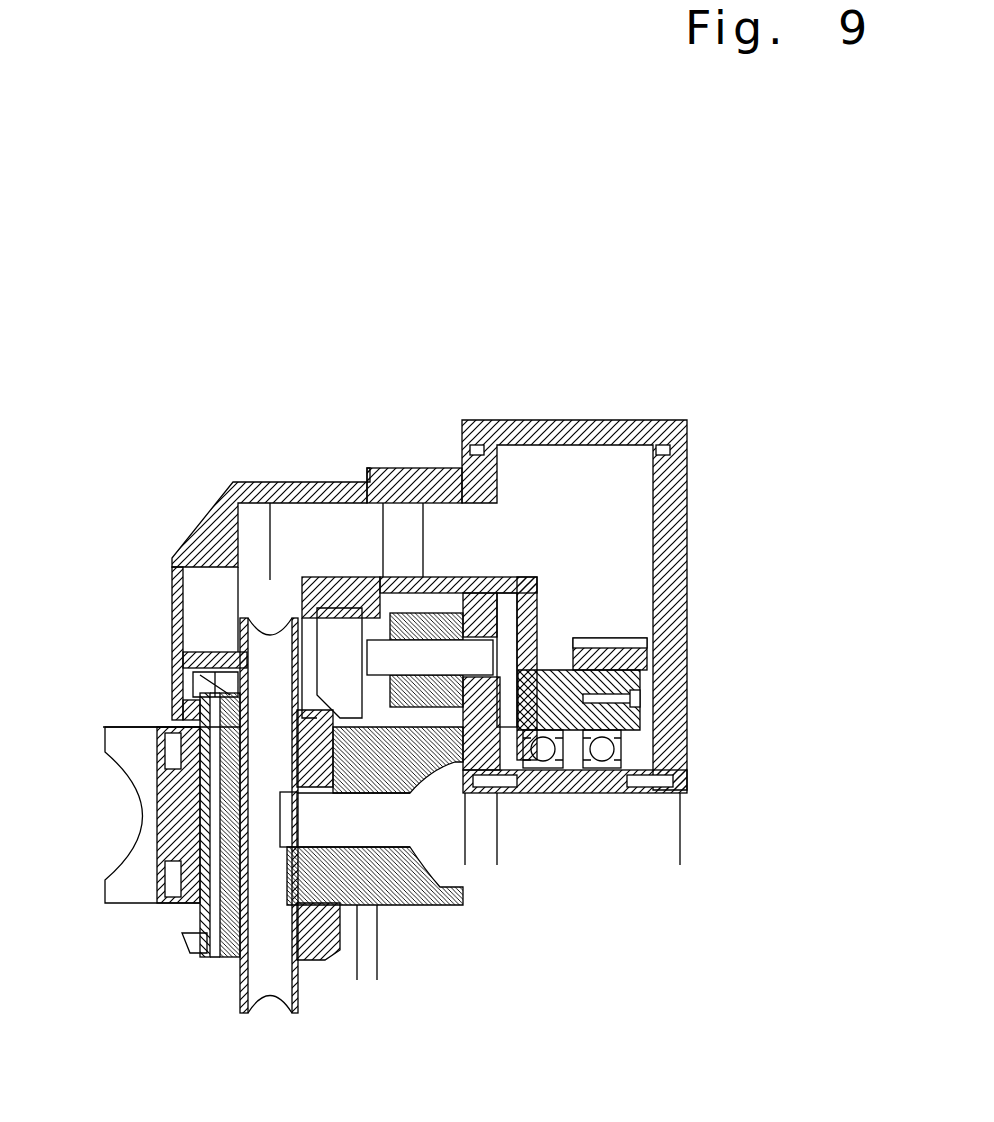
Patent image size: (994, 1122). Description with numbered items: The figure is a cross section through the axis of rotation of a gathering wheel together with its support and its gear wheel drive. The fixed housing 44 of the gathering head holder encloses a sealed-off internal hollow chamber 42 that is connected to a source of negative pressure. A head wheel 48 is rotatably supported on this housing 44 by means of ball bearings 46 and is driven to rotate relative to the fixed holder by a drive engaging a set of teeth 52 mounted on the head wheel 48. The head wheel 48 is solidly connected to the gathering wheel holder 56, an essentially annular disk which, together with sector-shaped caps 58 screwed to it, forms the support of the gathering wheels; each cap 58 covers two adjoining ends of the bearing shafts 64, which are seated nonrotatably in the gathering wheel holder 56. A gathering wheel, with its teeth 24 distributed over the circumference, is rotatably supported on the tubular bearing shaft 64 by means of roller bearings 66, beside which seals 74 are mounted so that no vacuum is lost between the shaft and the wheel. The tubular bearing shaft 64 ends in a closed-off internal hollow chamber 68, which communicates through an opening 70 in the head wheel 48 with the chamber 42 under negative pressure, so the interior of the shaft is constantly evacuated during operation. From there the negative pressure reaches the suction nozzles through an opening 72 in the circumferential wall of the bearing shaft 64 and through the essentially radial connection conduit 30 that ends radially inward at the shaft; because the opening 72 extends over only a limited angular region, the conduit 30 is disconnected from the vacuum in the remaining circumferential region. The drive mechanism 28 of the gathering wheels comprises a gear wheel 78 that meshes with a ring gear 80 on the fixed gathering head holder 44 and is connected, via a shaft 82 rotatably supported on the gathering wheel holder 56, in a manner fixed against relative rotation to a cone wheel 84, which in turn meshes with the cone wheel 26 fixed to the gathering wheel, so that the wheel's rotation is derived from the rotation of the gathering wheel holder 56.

The teeth 24 is at (110, 727).
The cone wheel 26 is at (188, 678).
The drive mechanism 28 is at (505, 623).
The connection conduit 30 is at (430, 905).
The internal hollow chamber 42 is at (622, 569).
The housing 44 is at (628, 420).
The ball bearing 46 is at (541, 752).
The head wheel 48 is at (443, 482).
The set of teeth 52 is at (635, 665).
The gathering wheel holder 56 is at (283, 482).
The sector-shaped cap 58 is at (203, 543).
The bearing shaft 64 is at (243, 993).
The roller bearing 66 is at (327, 960).
The internal hollow chamber 68 is at (292, 587).
The opening 70 is at (403, 540).
The opening 72 is at (285, 820).
The seal 74 is at (340, 915).
The gear wheel 78 is at (490, 600).
The ring gear 80 is at (478, 760).
The shaft 82 is at (428, 615).
The cone wheel 84 is at (337, 620).